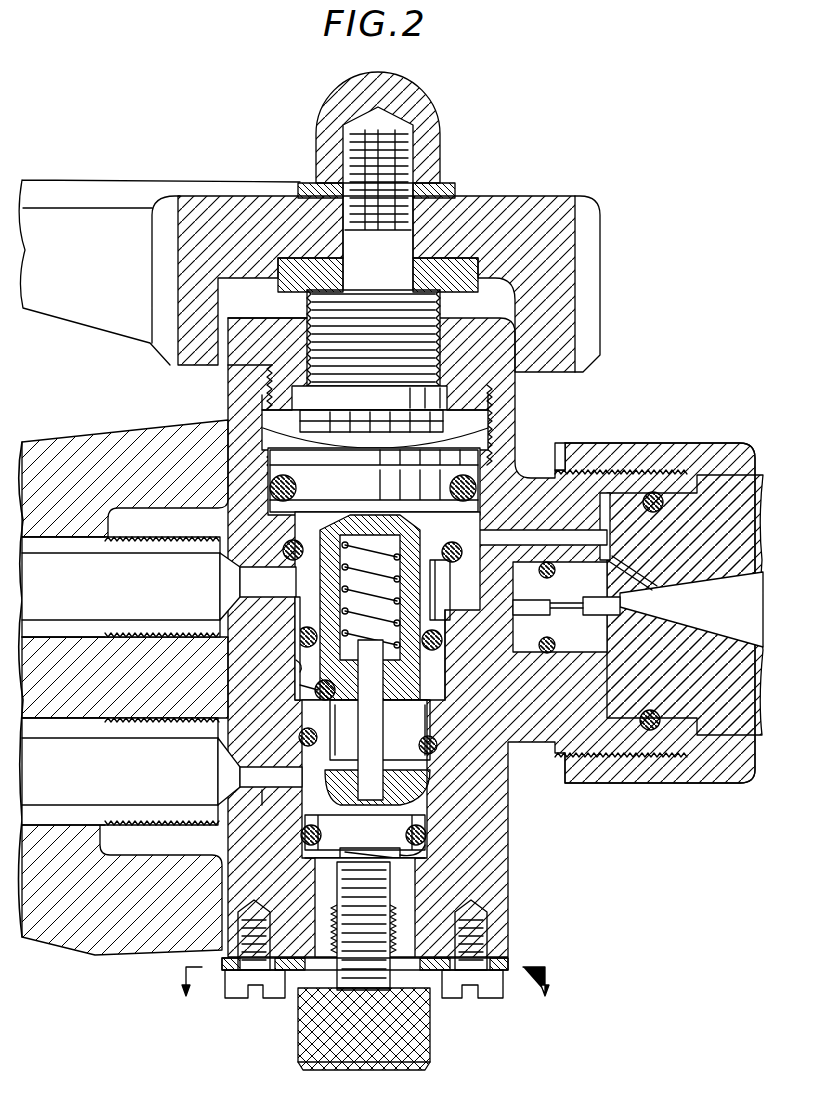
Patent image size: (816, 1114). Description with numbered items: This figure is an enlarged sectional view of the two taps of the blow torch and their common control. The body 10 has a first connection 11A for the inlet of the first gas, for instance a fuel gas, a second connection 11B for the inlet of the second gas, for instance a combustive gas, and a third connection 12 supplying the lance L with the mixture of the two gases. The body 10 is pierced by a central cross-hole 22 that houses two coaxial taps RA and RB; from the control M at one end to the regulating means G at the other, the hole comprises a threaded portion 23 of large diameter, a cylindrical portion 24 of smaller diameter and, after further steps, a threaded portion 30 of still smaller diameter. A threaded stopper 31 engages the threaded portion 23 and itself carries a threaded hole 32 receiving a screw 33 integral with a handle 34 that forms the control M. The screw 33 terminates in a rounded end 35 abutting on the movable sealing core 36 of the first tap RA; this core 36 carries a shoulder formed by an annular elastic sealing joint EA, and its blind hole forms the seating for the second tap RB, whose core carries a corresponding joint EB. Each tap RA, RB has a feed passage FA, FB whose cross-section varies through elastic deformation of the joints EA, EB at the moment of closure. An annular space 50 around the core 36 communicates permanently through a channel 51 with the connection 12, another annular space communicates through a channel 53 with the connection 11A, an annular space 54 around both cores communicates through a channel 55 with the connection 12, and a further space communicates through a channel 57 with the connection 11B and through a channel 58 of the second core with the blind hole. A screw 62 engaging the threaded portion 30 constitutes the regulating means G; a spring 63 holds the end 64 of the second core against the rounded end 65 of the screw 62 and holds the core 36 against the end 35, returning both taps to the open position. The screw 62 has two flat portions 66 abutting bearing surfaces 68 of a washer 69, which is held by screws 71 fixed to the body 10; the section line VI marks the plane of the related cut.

The body 10 is at (233, 910).
The first connection 11A is at (143, 548).
The second connection 11B is at (125, 726).
The third connection 12 is at (640, 460).
The central cross-hole 22 is at (298, 666).
The threaded portion 23 is at (265, 385).
The cylindrical portion 24 is at (270, 470).
The threaded portion 30 is at (328, 908).
The threaded stopper 31 is at (512, 348).
The threaded hole 32 is at (445, 315).
The screw 33 is at (312, 305).
The handle 34 is at (126, 180).
The rounded end 35 is at (462, 440).
The movable sealing core 36 is at (300, 428).
The annular space 50 is at (503, 500).
The channel 51 is at (540, 530).
The channel 53 is at (270, 592).
The annular space 54 is at (440, 696).
The channel 55 is at (478, 660).
The channel 57 is at (263, 782).
The channel 58 is at (362, 762).
The screw 62 is at (392, 893).
The spring 63 is at (413, 607).
The end 64 is at (416, 866).
The rounded end 65 is at (362, 855).
The flat portions 66 is at (348, 867).
The bearing surfaces 68 is at (338, 980).
The washer 69 is at (512, 960).
The screws 71 is at (235, 1000).
The regulating means G is at (432, 1035).
The lance L is at (732, 470).
The control M is at (272, 183).
The first tap RA is at (258, 552).
The annular elastic sealing joint EA is at (265, 575).
The feed passage FA is at (478, 560).
The second tap RB is at (287, 730).
The annular elastic sealing joint EB is at (300, 704).
The feed passage FB is at (307, 683).
The section line VI- VI is at (362, 996).